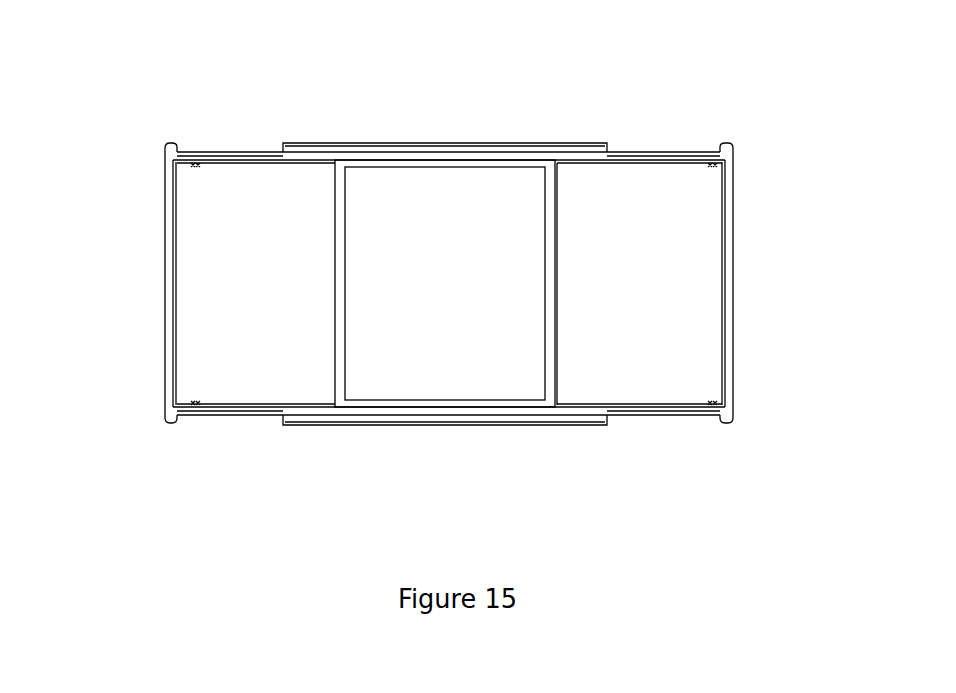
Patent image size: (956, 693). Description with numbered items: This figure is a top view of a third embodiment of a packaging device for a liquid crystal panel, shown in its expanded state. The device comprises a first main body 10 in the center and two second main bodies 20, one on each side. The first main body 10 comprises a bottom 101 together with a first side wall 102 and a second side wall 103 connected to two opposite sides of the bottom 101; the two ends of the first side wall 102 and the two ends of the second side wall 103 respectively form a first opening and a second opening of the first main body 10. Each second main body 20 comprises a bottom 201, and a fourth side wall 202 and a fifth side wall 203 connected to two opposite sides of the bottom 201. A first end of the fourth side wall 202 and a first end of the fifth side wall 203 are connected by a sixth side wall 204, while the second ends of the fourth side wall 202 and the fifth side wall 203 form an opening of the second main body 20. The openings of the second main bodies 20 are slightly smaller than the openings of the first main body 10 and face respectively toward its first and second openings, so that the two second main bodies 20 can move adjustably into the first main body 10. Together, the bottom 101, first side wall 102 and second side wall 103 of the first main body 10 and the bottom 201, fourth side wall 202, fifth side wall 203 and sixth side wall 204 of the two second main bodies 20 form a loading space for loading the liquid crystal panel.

The first main body 10 is at (453, 127).
The second main body 20 is at (150, 300).
The bottom 101 is at (470, 365).
The first side wall 102 is at (468, 143).
The second side wall 103 is at (449, 425).
The bottom 201 is at (618, 362).
The fourth side wall 202 is at (640, 150).
The fifth side wall 203 is at (655, 425).
The sixth side wall 204 is at (733, 377).